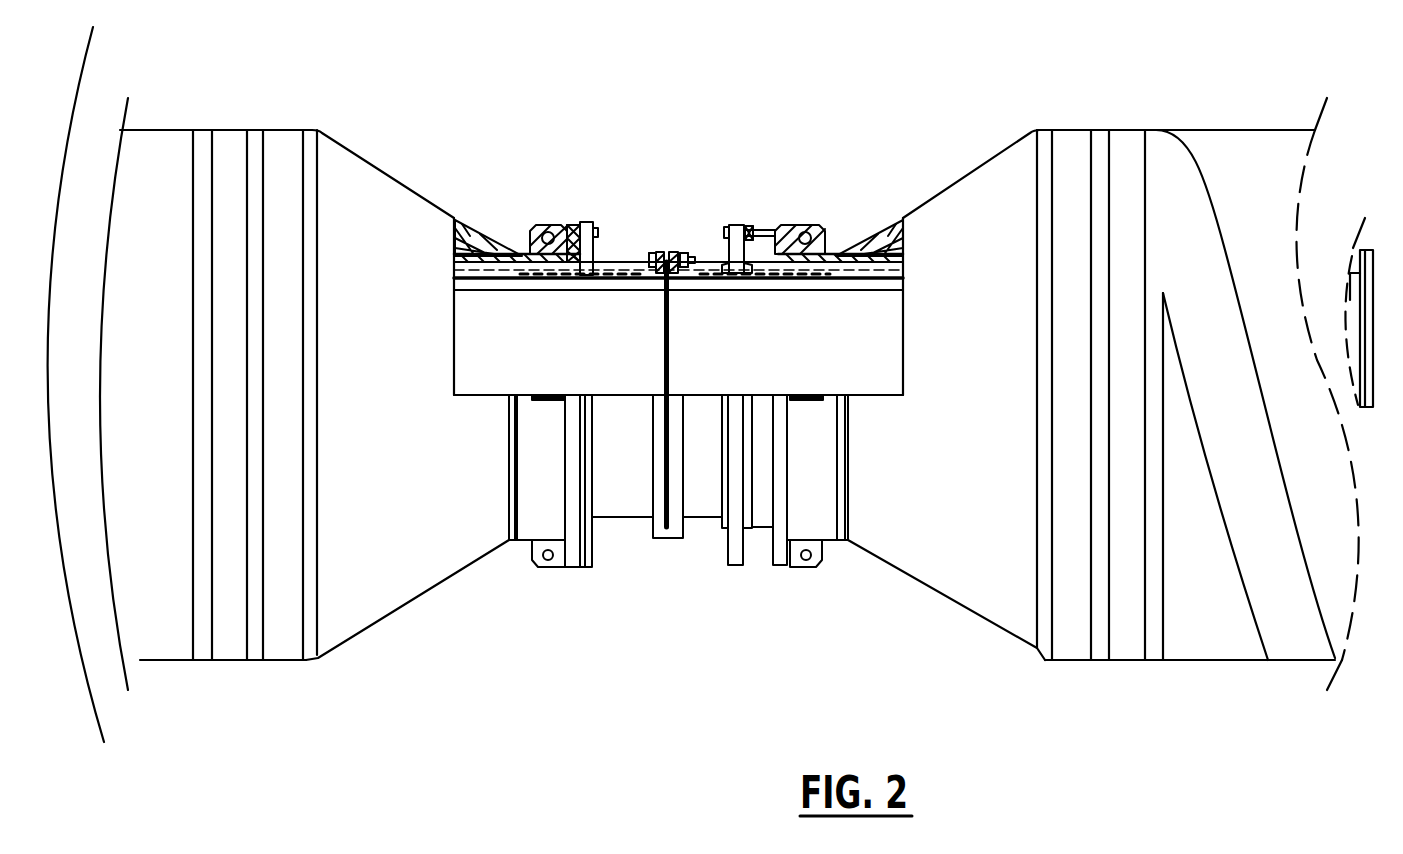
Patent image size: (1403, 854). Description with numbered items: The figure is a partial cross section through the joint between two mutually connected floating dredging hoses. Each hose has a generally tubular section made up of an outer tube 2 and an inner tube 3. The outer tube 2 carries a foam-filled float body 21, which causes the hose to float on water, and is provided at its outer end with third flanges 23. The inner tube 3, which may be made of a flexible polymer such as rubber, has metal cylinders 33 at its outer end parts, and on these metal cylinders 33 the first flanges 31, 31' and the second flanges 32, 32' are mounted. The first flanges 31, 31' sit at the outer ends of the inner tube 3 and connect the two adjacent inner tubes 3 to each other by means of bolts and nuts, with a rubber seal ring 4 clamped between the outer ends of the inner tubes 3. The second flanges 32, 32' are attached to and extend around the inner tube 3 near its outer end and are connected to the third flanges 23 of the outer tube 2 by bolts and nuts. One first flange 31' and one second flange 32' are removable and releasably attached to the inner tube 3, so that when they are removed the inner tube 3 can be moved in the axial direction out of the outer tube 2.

The outer tube 2 is at (845, 242).
The inner tube 3 is at (462, 283).
The rubber seal ring 4 is at (668, 528).
The float body 21 is at (148, 132).
The third flange 23 is at (580, 226).
The first flange 31 is at (672, 185).
The removable first flange 31' is at (684, 215).
The second flange 32 is at (606, 409).
The removable second flange 32' is at (758, 426).
The metal cylinder 33 is at (624, 518).